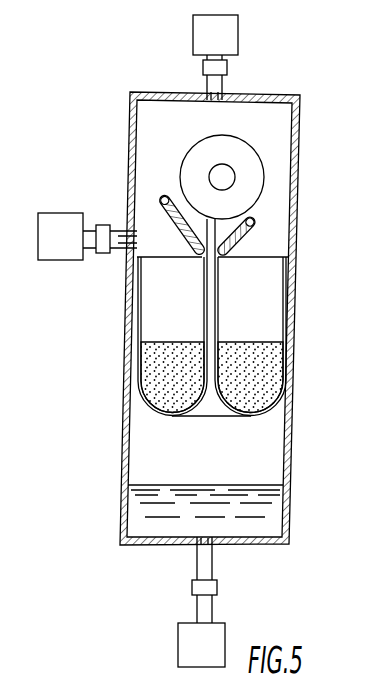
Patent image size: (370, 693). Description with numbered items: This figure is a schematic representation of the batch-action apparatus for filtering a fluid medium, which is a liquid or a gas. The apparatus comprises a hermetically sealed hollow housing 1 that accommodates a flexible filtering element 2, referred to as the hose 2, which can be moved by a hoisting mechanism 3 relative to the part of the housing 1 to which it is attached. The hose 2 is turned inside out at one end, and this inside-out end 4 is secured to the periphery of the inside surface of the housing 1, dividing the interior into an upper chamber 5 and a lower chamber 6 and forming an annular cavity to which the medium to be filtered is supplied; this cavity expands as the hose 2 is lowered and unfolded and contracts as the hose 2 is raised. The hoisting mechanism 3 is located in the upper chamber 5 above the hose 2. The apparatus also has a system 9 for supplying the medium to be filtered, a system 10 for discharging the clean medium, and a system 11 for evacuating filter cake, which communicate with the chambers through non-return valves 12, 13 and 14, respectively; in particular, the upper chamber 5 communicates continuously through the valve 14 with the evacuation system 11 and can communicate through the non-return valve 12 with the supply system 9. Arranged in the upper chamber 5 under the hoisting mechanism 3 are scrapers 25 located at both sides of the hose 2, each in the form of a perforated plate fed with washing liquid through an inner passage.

The hollow housing 1 is at (131, 107).
The flexible filtering element 2 is at (145, 414).
The hoisting mechanism 3 is at (248, 140).
The end of the hose turned inside out 4 is at (283, 280).
The upper chamber 5 is at (280, 207).
The lower chamber 6 is at (268, 457).
The system for supplying the medium to be filtered 9 is at (195, 26).
The system for discharging the clean medium 10 is at (185, 645).
The system for evacuating filter cake 11 is at (62, 225).
The non-return valve 12 is at (203, 66).
The non-return valve 13 is at (193, 587).
The valve 14 is at (100, 251).
The scrapers 25 is at (186, 242).